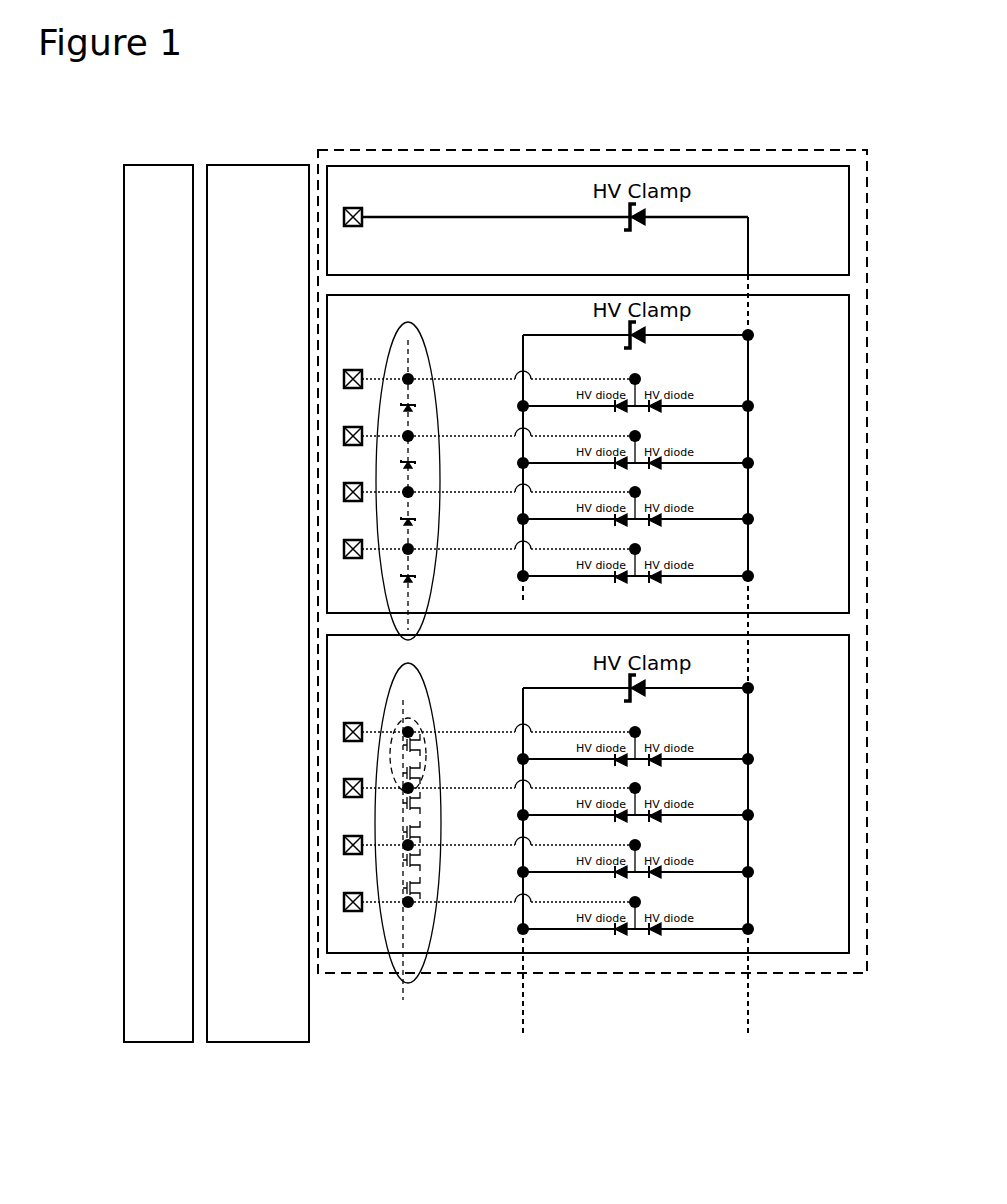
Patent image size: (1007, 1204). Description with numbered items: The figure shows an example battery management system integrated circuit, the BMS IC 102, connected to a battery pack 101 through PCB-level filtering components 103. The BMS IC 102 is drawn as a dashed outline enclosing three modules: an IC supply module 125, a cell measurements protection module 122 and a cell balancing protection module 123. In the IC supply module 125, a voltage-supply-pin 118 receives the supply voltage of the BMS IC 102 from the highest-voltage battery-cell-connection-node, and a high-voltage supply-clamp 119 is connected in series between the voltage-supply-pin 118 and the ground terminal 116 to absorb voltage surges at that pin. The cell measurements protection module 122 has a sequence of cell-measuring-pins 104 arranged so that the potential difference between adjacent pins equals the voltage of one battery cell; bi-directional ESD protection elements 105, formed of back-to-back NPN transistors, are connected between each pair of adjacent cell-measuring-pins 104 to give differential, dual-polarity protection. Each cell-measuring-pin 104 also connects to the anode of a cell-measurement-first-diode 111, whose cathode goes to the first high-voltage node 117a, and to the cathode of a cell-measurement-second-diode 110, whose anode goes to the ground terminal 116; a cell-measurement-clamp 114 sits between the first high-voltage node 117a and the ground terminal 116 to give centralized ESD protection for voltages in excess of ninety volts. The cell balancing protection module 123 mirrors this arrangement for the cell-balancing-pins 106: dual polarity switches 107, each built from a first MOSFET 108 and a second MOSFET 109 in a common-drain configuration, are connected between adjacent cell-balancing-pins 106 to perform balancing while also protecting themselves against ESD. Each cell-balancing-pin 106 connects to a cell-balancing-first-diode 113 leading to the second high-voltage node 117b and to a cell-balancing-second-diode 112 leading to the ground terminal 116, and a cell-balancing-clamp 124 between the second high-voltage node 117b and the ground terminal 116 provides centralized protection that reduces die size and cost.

The battery pack 101 is at (160, 163).
The BMS IC 102 is at (642, 151).
The filtering components 103 is at (257, 163).
The cell-measuring-pins 104 is at (345, 373).
The bi-directional ESD protection elements 105 is at (420, 396).
The cell-balancing-pins 106 is at (342, 740).
The dual polarity switches 107 is at (418, 724).
The first MOSFET 108 is at (424, 862).
The second MOSFET 109 is at (424, 888).
The cell-measurement-second-diodes 110 is at (662, 414).
The cell-measurement-first-diodes 111 is at (611, 414).
The cell-balancing-second-diodes 112 is at (662, 767).
The cell-balancing-first-diodes 113 is at (611, 767).
The cell-measurement-clamp 114 is at (644, 350).
The ground terminal 116 is at (751, 1022).
The first high-voltage node 117a is at (529, 586).
The second high-voltage node 117b is at (526, 1022).
The voltage-supply-pin 118 is at (356, 208).
The supply-clamp 119 is at (644, 231).
The cell measurements protection module 122 is at (850, 340).
The cell balancing protection module 123 is at (850, 660).
The cell-balancing-clamp 124 is at (644, 703).
The IC supply module 125 is at (850, 222).